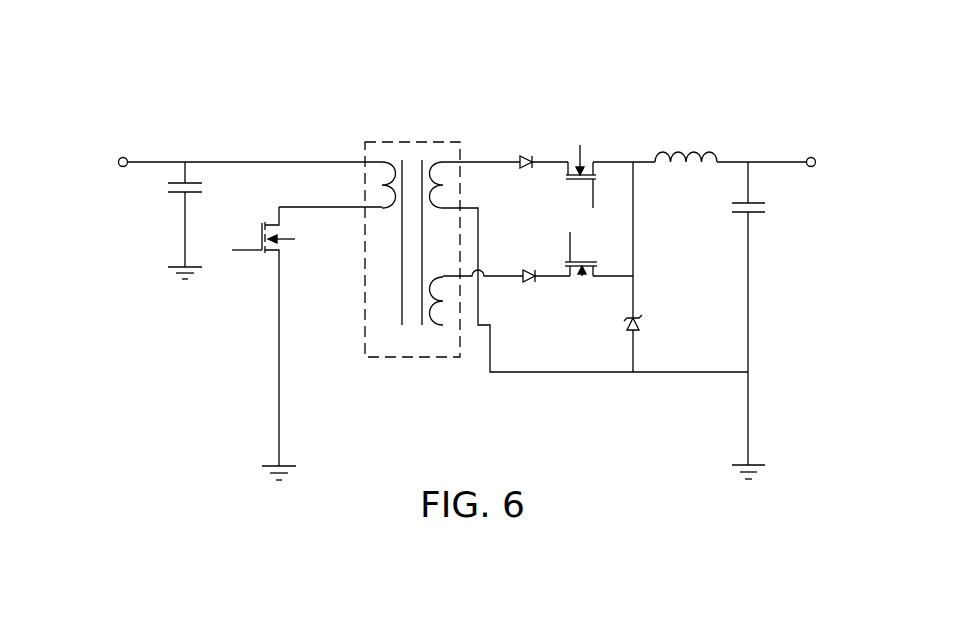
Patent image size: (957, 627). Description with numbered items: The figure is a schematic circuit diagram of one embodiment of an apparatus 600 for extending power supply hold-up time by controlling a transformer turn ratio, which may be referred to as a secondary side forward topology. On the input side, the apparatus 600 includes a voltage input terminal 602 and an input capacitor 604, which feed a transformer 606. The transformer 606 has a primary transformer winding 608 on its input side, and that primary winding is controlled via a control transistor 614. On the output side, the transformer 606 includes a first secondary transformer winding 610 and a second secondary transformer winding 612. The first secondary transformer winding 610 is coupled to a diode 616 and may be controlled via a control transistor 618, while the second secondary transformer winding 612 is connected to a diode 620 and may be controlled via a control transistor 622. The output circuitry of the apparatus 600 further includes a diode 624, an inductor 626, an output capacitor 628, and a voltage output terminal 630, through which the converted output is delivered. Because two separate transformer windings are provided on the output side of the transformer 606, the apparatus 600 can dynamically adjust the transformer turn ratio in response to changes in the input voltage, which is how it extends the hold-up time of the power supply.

The apparatus 600 is at (295, 70).
The voltage input terminal 602 is at (119, 166).
The input capacitor 604 is at (172, 192).
The transformer 606 is at (365, 292).
The primary transformer winding 608 is at (384, 162).
The first secondary transformer winding 610 is at (444, 162).
The second secondary transformer winding 612 is at (443, 326).
The control transistor 614 is at (263, 252).
The diode 616 is at (523, 160).
The control transistor 618 is at (569, 181).
The diode 620 is at (531, 282).
The control transistor 622 is at (582, 280).
The diode 624 is at (640, 328).
The inductor 626 is at (675, 160).
The output capacitor 628 is at (765, 212).
The voltage output terminal 630 is at (812, 168).